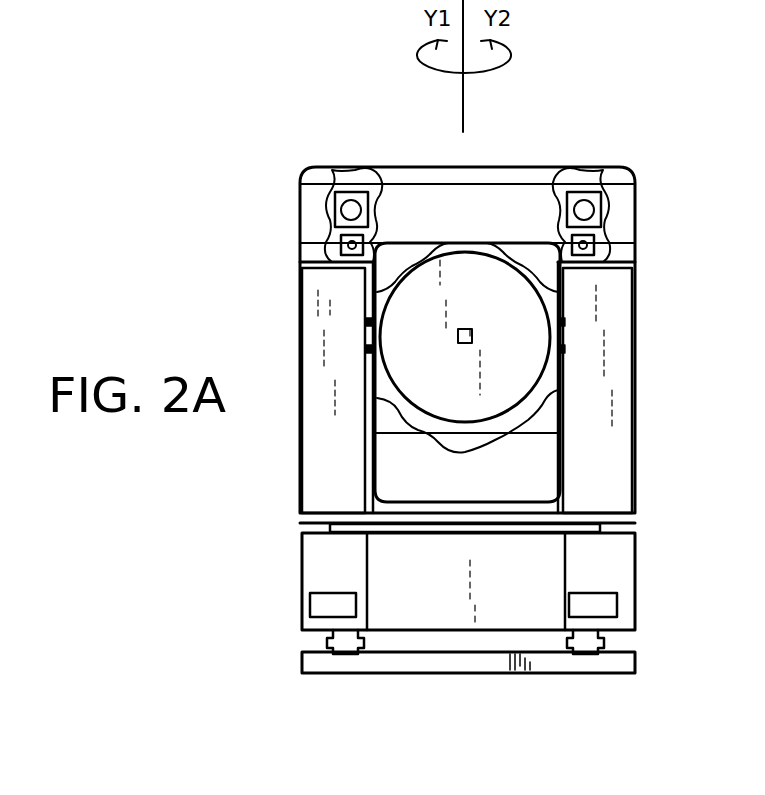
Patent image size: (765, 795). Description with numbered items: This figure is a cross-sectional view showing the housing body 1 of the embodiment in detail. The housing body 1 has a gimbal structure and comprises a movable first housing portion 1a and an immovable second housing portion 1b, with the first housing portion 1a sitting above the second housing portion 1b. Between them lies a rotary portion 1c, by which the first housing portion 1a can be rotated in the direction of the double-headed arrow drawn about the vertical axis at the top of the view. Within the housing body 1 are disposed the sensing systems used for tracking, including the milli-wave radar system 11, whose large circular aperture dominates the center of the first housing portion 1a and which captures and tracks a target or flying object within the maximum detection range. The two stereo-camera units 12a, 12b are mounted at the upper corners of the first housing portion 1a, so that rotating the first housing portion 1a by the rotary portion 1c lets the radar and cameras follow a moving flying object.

The housing body 1 is at (512, 167).
The first housing portion 1a is at (620, 380).
The second housing portion 1b is at (619, 562).
The rotary portion 1c is at (329, 528).
The milli-wave radar system 11 is at (402, 367).
The fixture (right) 12a is at (595, 198).
The fixture (left) 12b is at (341, 200).